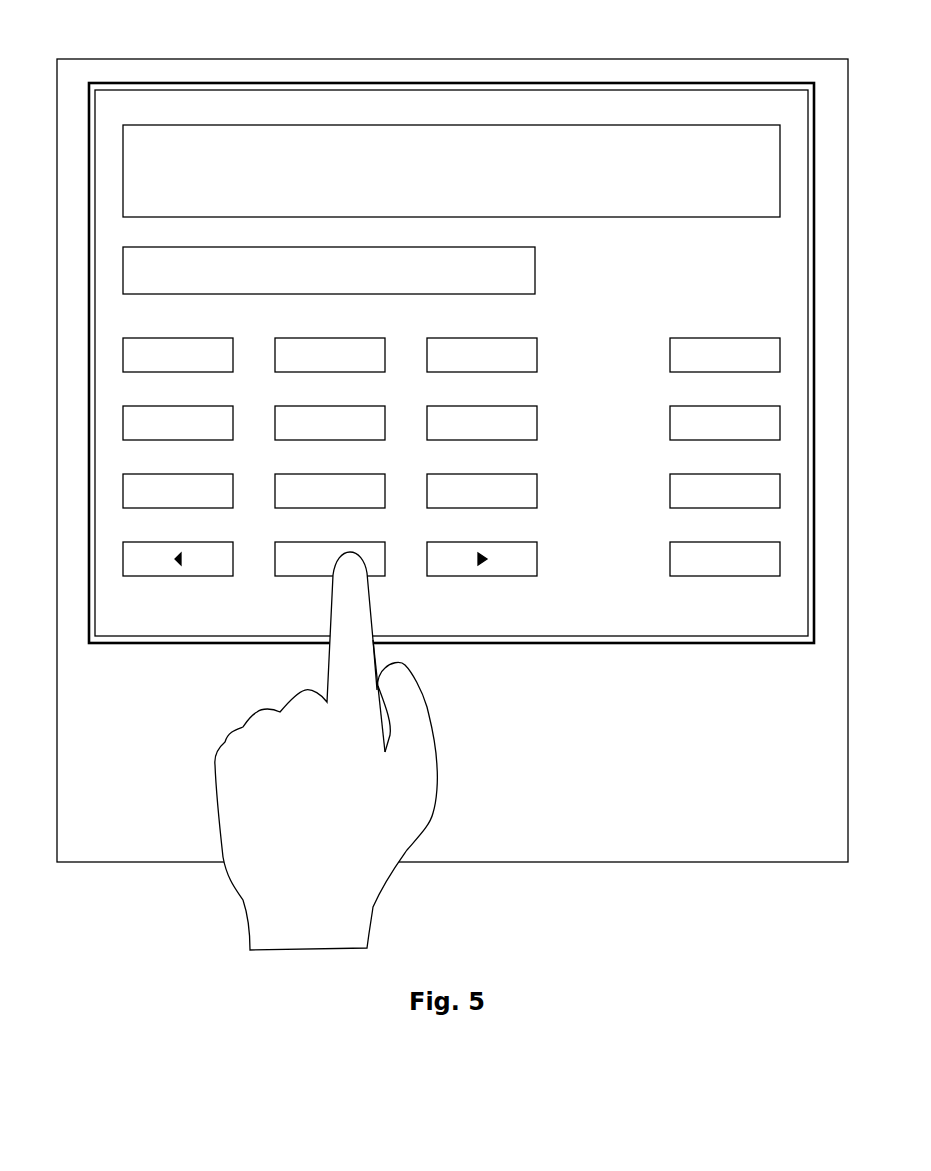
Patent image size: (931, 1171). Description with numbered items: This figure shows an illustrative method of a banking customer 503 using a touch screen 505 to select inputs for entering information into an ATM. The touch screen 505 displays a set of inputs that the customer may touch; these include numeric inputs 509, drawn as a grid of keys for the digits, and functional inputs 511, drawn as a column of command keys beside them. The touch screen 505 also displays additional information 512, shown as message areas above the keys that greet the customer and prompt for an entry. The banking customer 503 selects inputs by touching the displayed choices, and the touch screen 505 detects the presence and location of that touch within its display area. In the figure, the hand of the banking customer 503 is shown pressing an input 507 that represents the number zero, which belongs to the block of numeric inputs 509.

The banking customer 503 is at (438, 778).
The touch screen 505 is at (548, 58).
The input representing the number zero 507 is at (387, 568).
The numeric inputs 509 is at (373, 470).
The functional inputs 511 is at (665, 548).
The additional information 512 is at (755, 218).